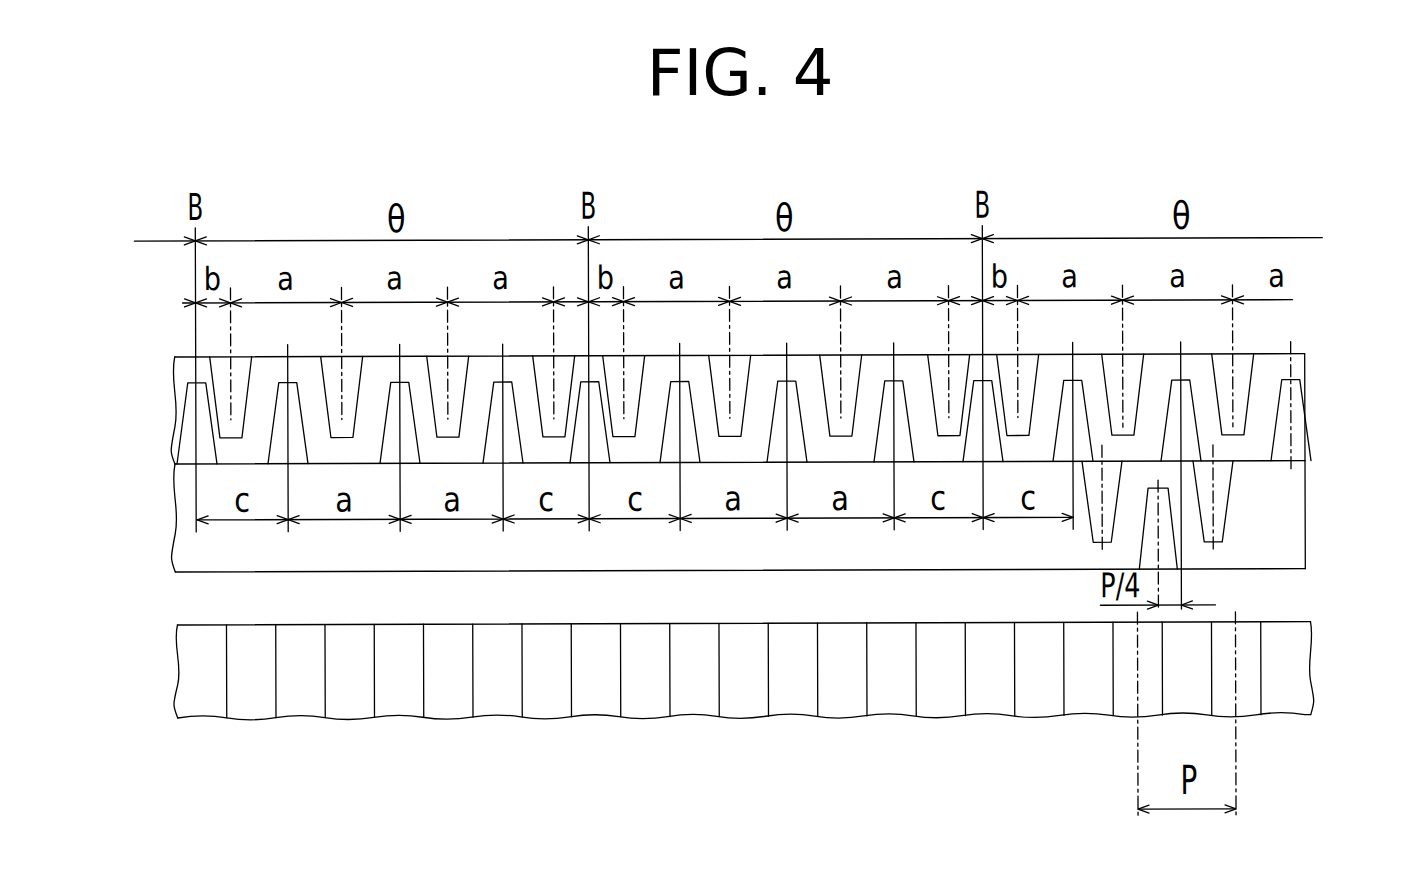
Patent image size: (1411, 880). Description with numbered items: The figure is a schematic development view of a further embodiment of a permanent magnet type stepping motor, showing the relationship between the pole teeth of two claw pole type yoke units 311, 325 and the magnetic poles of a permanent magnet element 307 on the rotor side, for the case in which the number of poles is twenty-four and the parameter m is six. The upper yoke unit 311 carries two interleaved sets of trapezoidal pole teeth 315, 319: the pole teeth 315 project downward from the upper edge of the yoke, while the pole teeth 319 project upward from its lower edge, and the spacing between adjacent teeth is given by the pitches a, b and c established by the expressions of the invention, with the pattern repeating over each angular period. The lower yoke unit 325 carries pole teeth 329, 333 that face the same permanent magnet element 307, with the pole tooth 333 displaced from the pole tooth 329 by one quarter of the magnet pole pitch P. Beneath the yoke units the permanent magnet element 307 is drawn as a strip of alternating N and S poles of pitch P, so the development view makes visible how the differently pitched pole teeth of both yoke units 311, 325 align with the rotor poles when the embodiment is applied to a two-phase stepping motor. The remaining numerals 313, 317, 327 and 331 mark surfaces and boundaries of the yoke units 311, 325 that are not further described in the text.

The permanent magnet element 307 is at (1297, 698).
The claw pole type yoke unit 311 is at (1310, 387).
The upper surface of stator core 313 is at (1265, 357).
The pole teeth 315 is at (225, 377).
The boundary of stator core 317 is at (1308, 468).
The pole teeth 319 is at (190, 424).
The claw pole type yoke unit 325 is at (1286, 516).
The auxiliary pole tooth 327 is at (1241, 480).
The pole teeth 329 is at (1222, 513).
The bottom surface of auxiliary core 331 is at (1194, 578).
The pole teeth 333 is at (1167, 556).